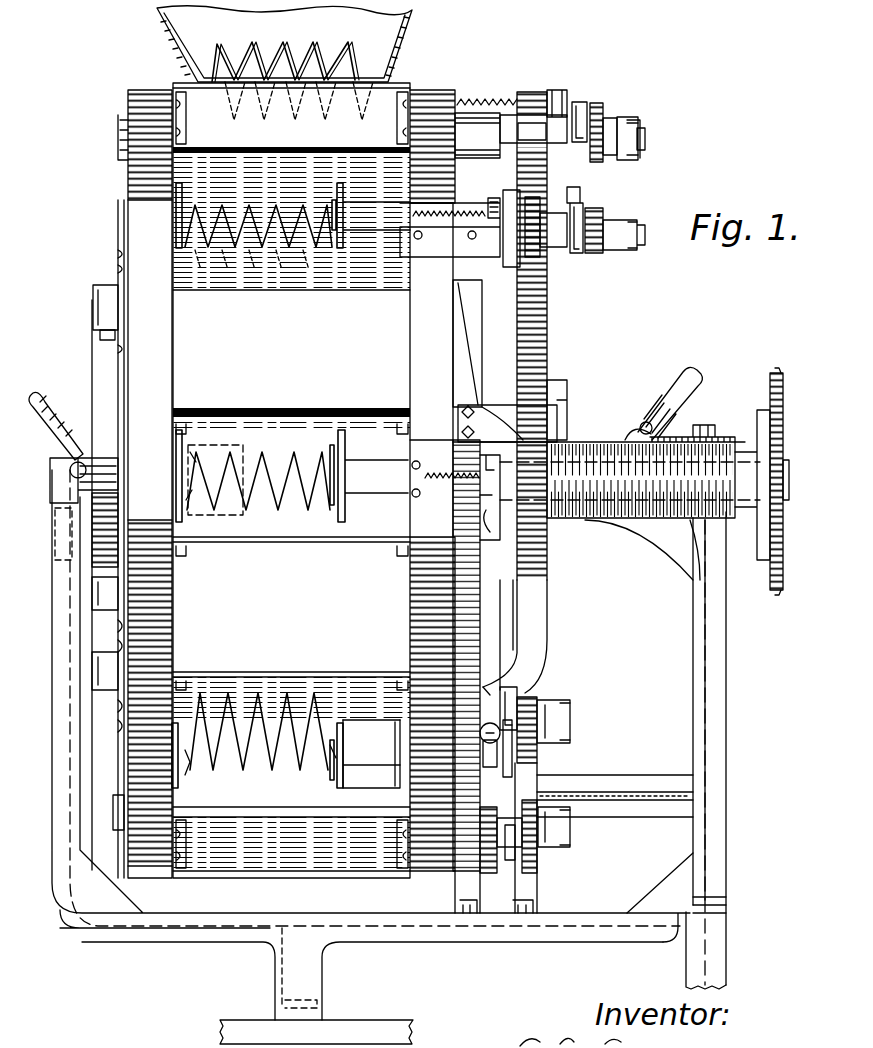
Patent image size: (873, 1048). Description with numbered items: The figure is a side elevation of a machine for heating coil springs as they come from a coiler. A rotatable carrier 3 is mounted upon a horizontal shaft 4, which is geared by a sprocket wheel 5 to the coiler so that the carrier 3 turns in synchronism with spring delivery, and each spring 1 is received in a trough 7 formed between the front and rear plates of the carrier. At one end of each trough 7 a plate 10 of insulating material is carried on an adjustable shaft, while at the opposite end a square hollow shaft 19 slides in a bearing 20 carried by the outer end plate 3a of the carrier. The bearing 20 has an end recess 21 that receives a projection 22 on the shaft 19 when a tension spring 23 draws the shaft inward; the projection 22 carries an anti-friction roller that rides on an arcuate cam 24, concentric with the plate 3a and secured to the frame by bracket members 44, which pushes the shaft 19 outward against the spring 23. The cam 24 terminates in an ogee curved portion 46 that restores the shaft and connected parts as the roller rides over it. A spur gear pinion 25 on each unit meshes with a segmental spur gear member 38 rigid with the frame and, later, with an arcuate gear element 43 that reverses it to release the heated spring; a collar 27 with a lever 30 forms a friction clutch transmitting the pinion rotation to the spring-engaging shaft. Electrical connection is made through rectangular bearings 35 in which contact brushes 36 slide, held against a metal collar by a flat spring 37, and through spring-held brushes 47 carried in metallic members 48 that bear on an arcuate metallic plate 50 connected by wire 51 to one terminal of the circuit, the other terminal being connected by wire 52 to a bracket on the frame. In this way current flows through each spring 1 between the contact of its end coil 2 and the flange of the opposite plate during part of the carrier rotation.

The spring 1 is at (287, 70).
The end coil 2 is at (214, 64).
The rotatable carrier 3 is at (138, 178).
The outer end plate 3a is at (417, 355).
The horizontal shaft 4 is at (612, 515).
The sprocket wheel 5 is at (777, 372).
The trough 7 is at (295, 132).
The plate of insulating material 10 is at (88, 355).
The square hollow shaft 19 is at (365, 760).
The bearing 20 is at (470, 156).
The end recess 21 is at (488, 520).
The projection 22 is at (564, 116).
The tension spring 23 is at (509, 106).
The arcuate cam 24 is at (545, 310).
The spur gear pinion 25 is at (605, 106).
The collar 27 is at (622, 150).
The lever 30 is at (640, 130).
The rectangular bearing 35 is at (536, 698).
The electrical contact brush 36 is at (517, 692).
The flat spring 37 is at (575, 143).
The segmental spur gear member 38 is at (535, 318).
The arcuate gear element 43 is at (536, 775).
The bracket member 44 is at (664, 442).
The ogee curved portion 46 is at (516, 678).
The spring-held brush 47 is at (98, 336).
The metallic member 48 is at (104, 308).
The arcuate metallic plate 50 is at (102, 527).
The wire 51 is at (45, 398).
The wire 52 is at (632, 398).